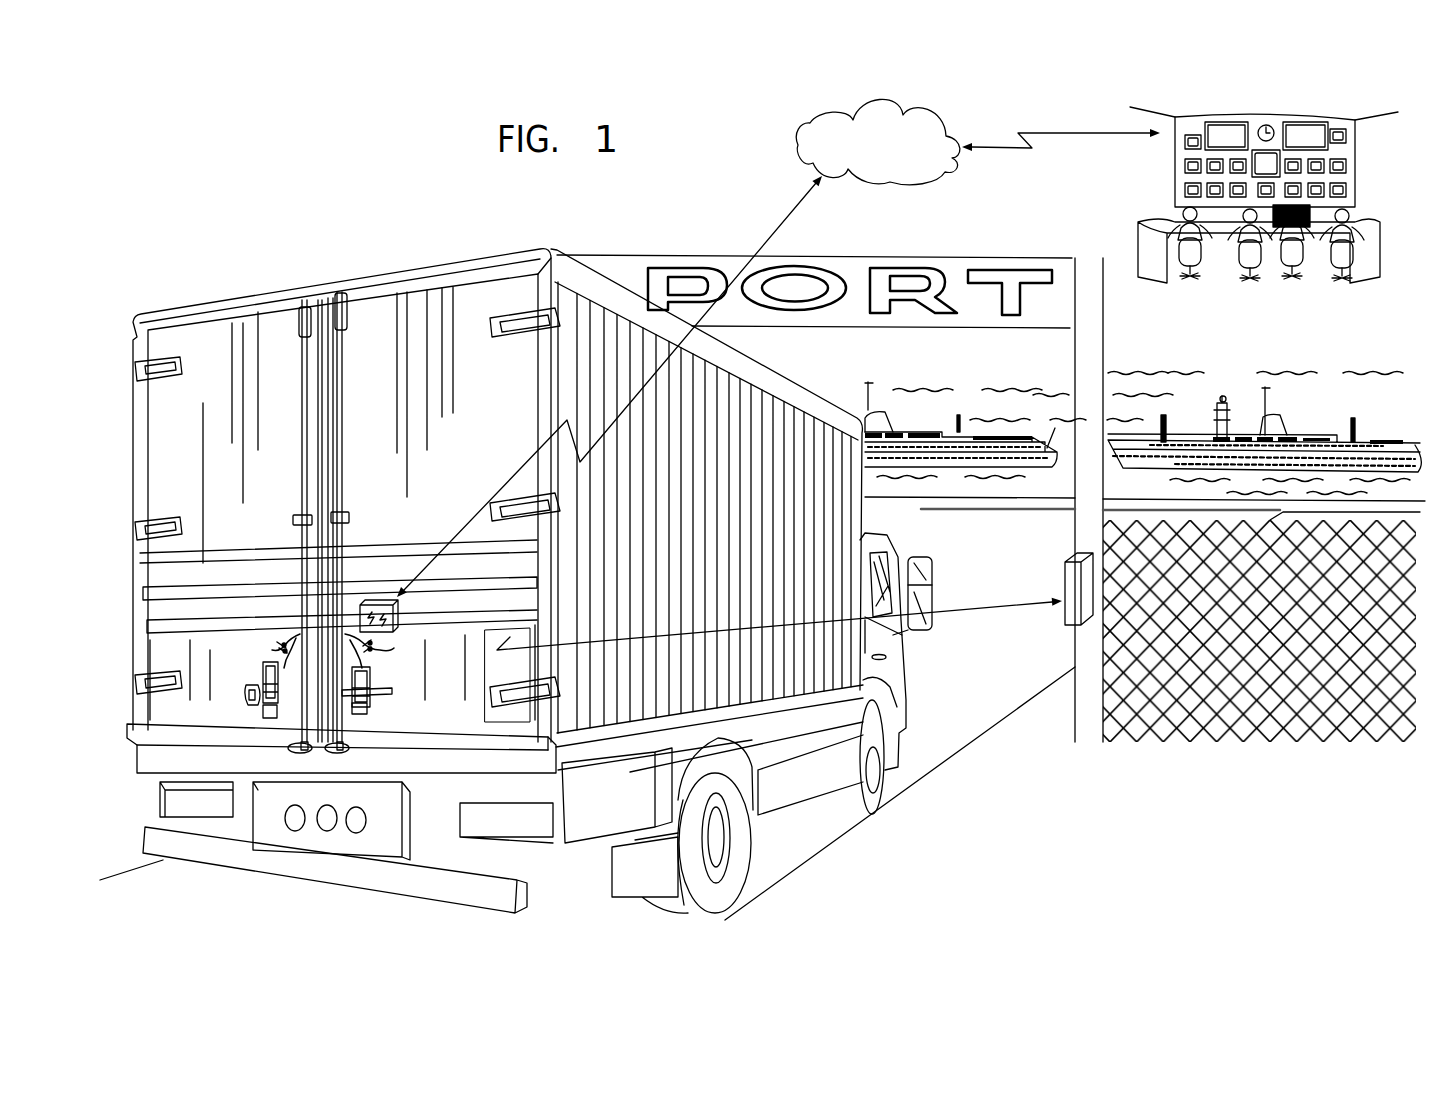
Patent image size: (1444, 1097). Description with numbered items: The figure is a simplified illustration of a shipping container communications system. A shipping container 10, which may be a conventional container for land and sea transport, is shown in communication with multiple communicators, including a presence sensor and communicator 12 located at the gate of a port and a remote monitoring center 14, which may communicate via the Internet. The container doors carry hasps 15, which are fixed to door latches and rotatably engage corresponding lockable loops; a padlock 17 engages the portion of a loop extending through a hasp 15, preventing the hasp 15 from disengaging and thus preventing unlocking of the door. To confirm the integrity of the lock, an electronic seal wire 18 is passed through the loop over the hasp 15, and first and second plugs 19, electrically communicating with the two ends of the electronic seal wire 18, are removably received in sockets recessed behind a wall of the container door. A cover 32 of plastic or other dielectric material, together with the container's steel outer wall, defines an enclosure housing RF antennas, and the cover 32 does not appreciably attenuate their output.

The shipping container 10 is at (166, 296).
The presence sensor and communicator 12 is at (1066, 583).
The remote monitoring center 14 is at (1368, 100).
The hasp 15 is at (240, 702).
The padlock 17 is at (272, 722).
The electronic seal wire 18 is at (262, 670).
The plug 19 is at (272, 646).
The cover 32 is at (378, 604).